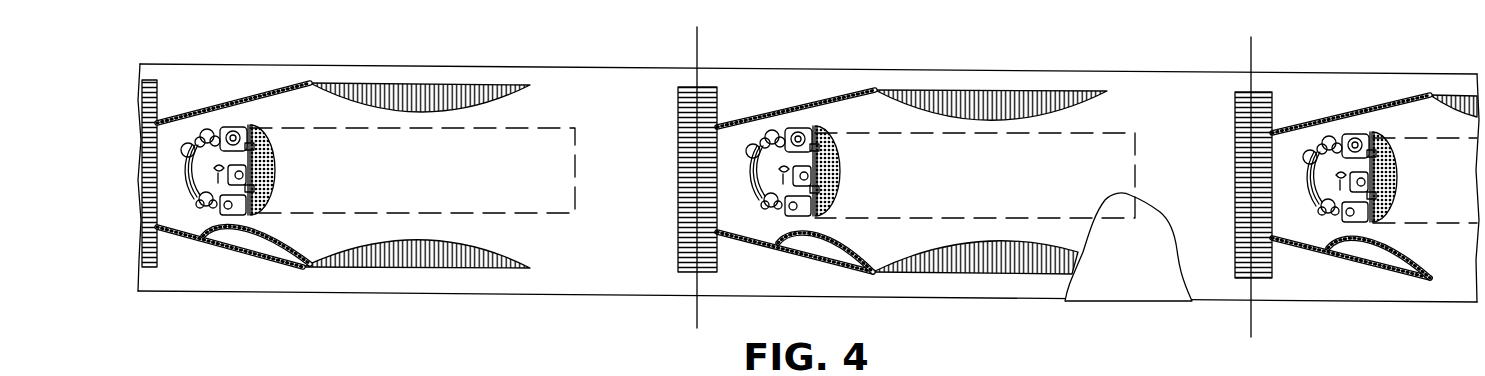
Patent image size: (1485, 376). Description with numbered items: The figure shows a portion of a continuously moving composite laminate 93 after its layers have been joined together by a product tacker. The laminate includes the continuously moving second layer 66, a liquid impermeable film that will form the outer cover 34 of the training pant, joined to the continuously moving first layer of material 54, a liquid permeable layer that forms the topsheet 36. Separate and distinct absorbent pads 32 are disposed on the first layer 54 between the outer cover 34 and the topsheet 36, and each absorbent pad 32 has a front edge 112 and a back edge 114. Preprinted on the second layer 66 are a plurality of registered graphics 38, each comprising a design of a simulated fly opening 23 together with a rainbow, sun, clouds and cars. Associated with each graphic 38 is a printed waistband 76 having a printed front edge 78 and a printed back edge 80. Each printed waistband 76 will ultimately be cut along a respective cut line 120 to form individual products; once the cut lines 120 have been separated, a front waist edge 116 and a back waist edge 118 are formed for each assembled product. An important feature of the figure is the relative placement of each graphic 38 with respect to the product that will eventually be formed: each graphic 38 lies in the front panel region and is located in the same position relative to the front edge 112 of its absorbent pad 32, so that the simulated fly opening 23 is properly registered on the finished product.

The fly opening 23 is at (878, 222).
The absorbent pad 32 is at (1113, 210).
The outer cover 34 is at (557, 280).
The topsheet 36 is at (1097, 276).
The registered graphic 38 is at (277, 243).
The first layer of material 54 is at (1143, 282).
The second layer 66 is at (616, 275).
The printed waistband 76 is at (692, 278).
The printed front edge 78 is at (678, 157).
The printed back edge 80 is at (717, 257).
The composite laminate 93 is at (972, 303).
The front edge 112 is at (782, 127).
The back edge 114 is at (575, 183).
The front waist edge 116 is at (718, 96).
The back waist edge 118 is at (1236, 91).
The cut line 120 is at (697, 43).